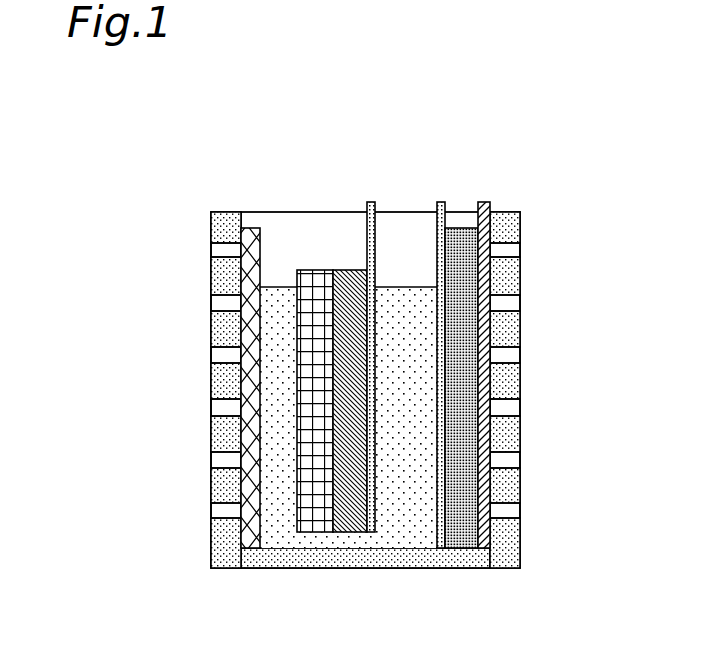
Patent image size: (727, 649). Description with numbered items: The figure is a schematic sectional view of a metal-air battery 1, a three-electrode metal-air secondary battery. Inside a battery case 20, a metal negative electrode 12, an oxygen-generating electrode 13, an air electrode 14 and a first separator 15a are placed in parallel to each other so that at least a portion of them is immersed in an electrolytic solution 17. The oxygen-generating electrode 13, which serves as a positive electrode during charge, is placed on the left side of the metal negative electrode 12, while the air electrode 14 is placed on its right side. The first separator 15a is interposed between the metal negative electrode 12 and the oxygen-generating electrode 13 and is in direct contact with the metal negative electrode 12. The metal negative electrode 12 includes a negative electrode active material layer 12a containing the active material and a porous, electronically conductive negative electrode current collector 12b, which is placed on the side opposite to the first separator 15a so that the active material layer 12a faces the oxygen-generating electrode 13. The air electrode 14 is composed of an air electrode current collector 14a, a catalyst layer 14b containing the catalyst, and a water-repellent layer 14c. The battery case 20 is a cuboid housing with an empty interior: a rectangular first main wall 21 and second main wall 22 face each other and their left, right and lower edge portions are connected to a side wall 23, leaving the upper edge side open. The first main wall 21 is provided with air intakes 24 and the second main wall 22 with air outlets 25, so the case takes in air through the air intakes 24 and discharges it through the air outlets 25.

The metal-air battery 1 is at (94, 130).
The metal negative electrode 12 is at (392, 123).
The negative electrode active material layer 12a is at (350, 270).
The negative electrode current collector 12b is at (368, 203).
The oxygen-generating electrode 13 is at (254, 228).
The air electrode 14 is at (605, 123).
The air electrode current collector 14a is at (441, 203).
The catalyst layer 14b is at (462, 228).
The water-repellent layer 14c is at (487, 205).
The first separator 15a is at (316, 268).
The electrolytic solution 17 is at (402, 287).
The battery case 20 is at (520, 266).
The first main wall 21 is at (520, 433).
The second main wall 22 is at (211, 432).
The side wall 23 is at (282, 569).
The air intakes 24 is at (512, 355).
The air outlets 25 is at (220, 360).